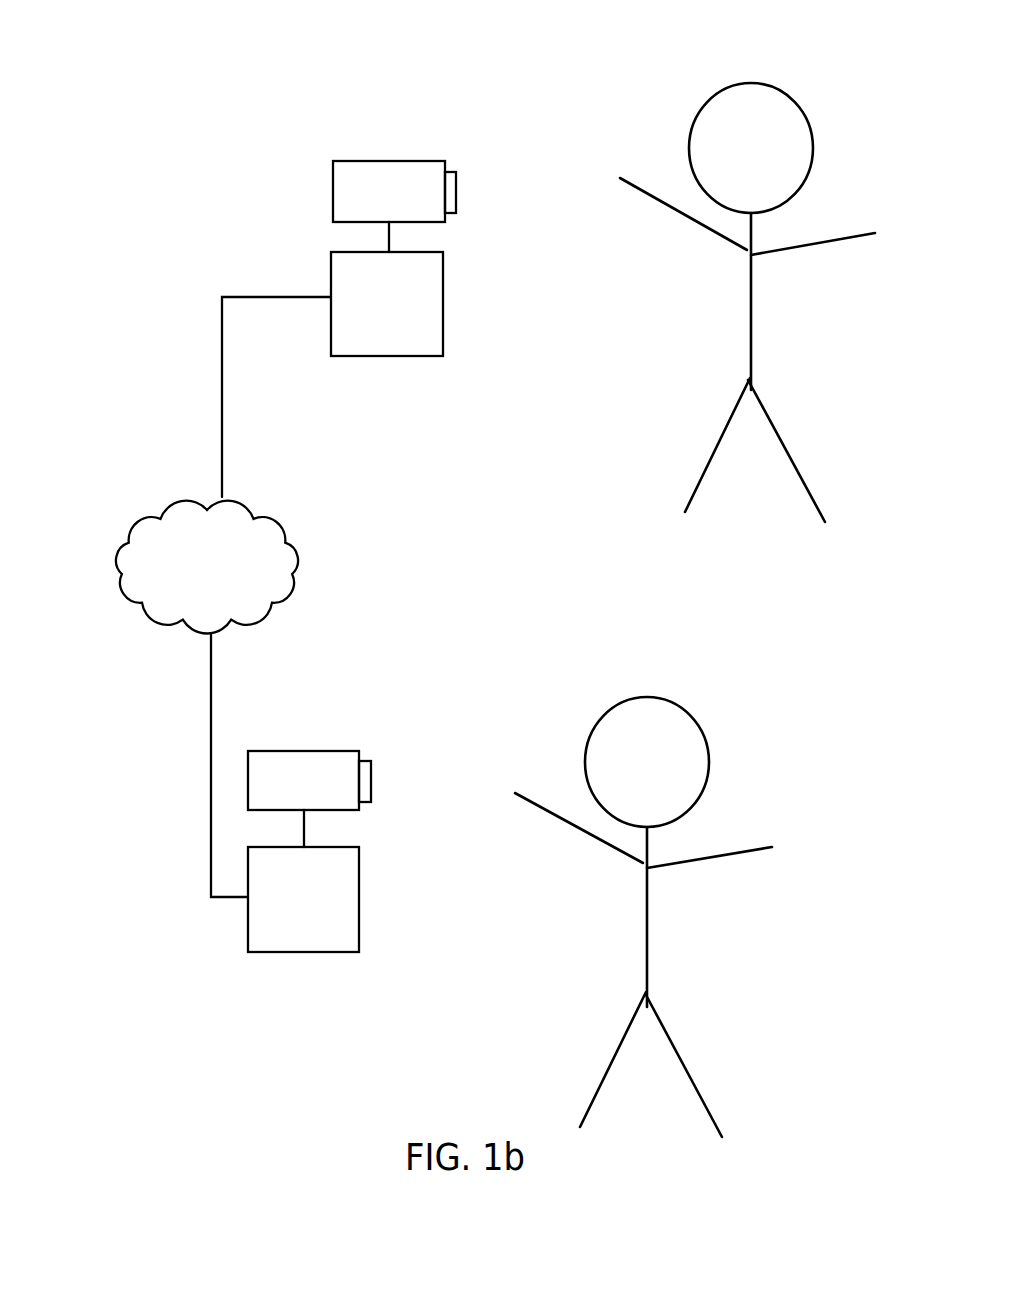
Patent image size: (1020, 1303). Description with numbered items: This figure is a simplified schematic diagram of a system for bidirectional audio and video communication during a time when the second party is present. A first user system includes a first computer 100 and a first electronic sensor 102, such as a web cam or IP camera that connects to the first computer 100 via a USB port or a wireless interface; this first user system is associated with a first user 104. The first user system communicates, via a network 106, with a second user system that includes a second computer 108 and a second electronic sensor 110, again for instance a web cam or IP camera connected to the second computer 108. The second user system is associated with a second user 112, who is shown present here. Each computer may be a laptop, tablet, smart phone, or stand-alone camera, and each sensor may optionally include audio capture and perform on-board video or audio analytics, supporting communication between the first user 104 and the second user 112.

The first computer 100 is at (276, 952).
The first electronic sensor 102 is at (317, 751).
The first user 104 is at (758, 764).
The network 106 is at (162, 628).
The second computer 108 is at (380, 356).
The second electronic sensor 110 is at (400, 161).
The second user 112 is at (792, 330).